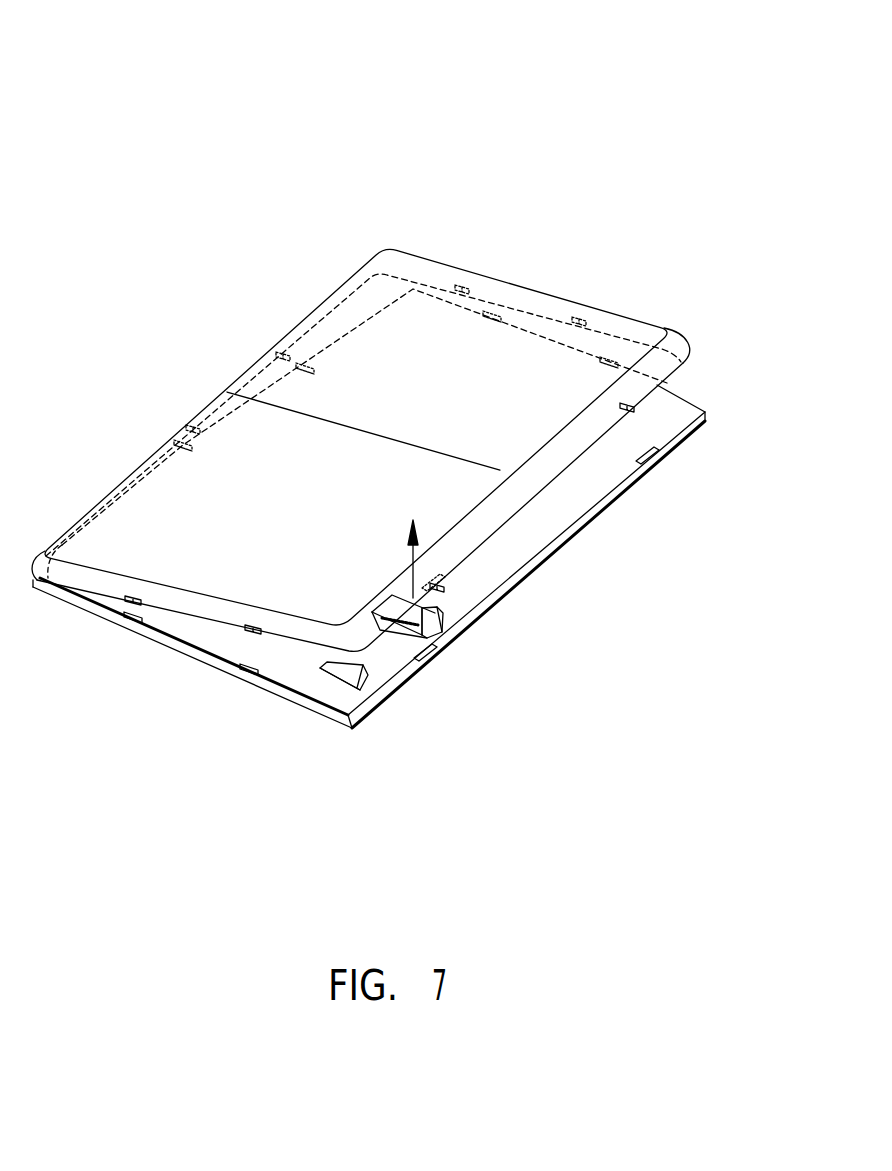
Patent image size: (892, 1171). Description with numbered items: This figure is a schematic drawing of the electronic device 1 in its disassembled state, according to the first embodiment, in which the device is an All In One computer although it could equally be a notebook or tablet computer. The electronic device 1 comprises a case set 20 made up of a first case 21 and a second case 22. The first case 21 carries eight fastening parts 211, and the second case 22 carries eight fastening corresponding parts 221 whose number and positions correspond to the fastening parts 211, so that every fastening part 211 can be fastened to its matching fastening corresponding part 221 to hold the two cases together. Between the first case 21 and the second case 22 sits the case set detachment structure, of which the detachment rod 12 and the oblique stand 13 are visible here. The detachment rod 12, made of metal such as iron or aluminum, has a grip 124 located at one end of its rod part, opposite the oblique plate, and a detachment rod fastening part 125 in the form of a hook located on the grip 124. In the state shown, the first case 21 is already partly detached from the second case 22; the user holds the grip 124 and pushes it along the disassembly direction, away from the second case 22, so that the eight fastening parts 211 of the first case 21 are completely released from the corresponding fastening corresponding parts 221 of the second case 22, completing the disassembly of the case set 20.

The electronic device 1 is at (115, 115).
The case set 20 is at (210, 163).
The first case 21 is at (372, 257).
The second case 22 is at (65, 595).
The fastening part 211 is at (458, 283).
The fastening corresponding part 221 is at (487, 310).
The detachment rod 12 is at (398, 612).
The oblique stand 13 is at (367, 683).
The grip 124 is at (433, 643).
The detachment rod fastening part 125 is at (430, 636).